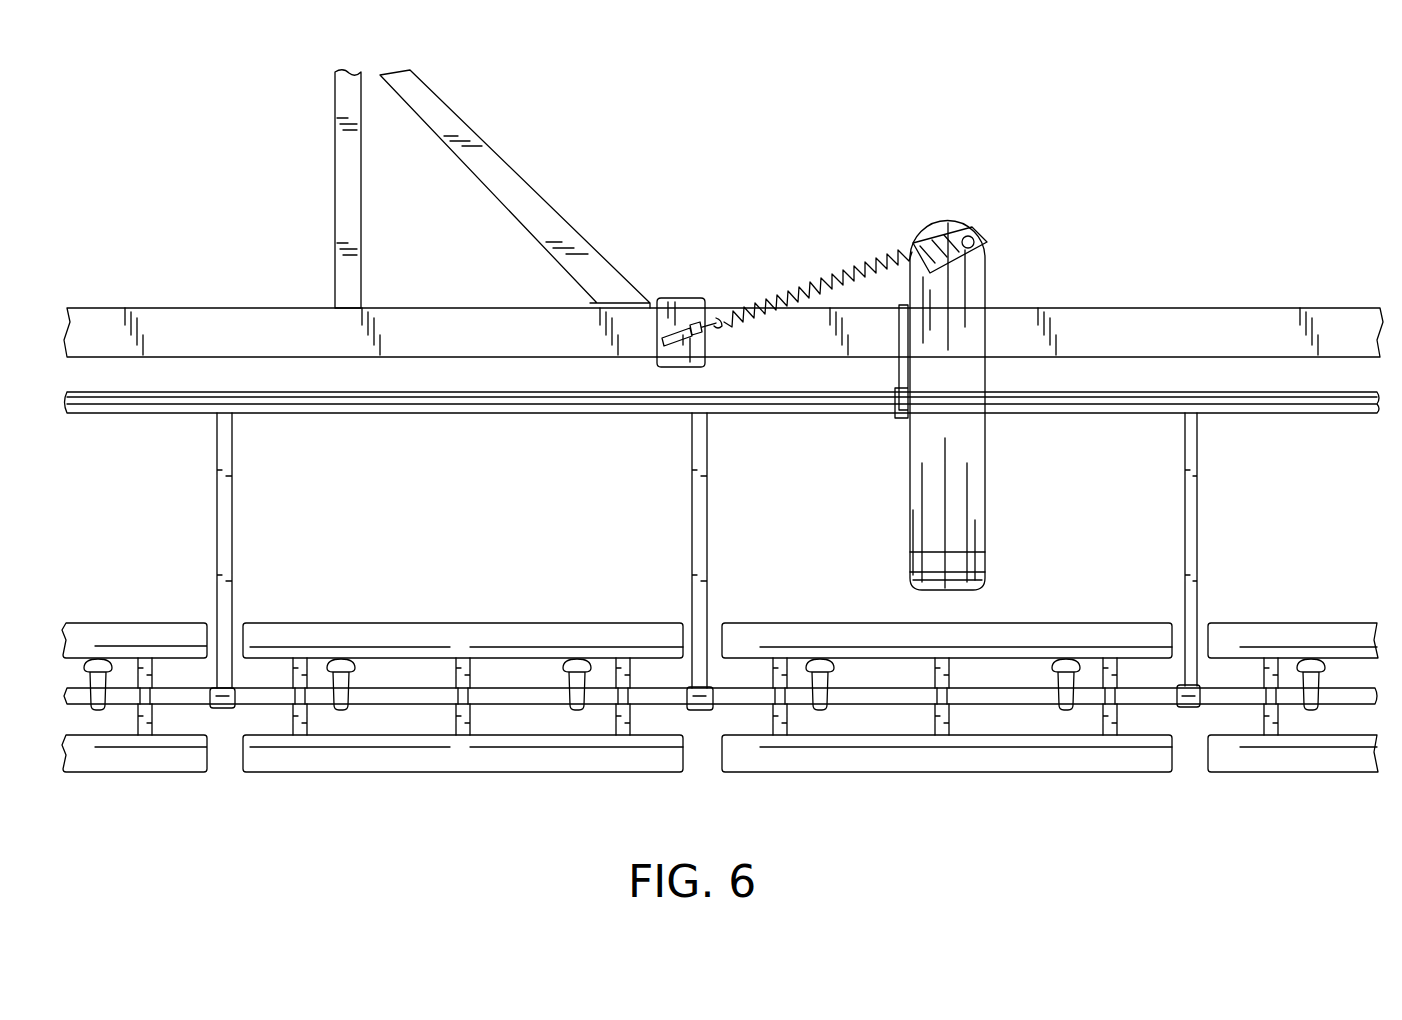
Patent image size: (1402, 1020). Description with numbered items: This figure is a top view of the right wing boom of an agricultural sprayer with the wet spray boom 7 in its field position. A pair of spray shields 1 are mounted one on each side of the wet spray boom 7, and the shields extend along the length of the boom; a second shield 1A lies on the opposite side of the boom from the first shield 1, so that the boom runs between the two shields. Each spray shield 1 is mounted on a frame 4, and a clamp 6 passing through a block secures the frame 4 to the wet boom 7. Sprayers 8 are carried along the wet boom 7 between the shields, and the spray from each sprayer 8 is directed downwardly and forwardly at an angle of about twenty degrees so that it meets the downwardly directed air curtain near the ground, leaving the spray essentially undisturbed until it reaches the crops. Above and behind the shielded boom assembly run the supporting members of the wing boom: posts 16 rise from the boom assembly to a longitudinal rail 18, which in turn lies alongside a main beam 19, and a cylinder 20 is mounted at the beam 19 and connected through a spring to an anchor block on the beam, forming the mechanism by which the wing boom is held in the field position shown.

The spray shield 1 is at (987, 633).
The lower tie plank 1A is at (890, 762).
The frame 4 is at (1107, 718).
The clamp 6 is at (937, 690).
The wet spray boom 7 is at (1022, 703).
The sprayer 8 is at (1062, 660).
The vertical support post 16 is at (1198, 494).
The guide rail 18 is at (1267, 402).
The beam 19 is at (1138, 322).
The cylinder 20 is at (972, 281).